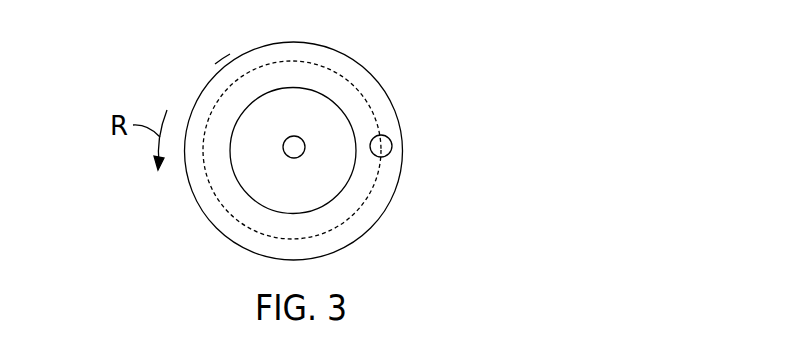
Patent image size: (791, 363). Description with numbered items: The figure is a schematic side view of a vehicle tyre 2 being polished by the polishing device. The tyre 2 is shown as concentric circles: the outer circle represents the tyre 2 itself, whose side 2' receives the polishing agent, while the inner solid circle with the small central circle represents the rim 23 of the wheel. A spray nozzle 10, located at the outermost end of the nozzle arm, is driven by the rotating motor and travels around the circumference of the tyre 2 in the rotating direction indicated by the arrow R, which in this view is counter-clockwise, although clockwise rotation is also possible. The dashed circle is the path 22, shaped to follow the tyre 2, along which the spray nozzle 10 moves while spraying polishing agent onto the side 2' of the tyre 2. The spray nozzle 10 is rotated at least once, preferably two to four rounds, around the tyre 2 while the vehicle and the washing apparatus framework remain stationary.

The tyre 2 is at (323, 151).
The side of the tyre 2' is at (190, 54).
The spray nozzle 10 is at (383, 144).
The path 22 is at (370, 195).
The rim 23 is at (310, 195).